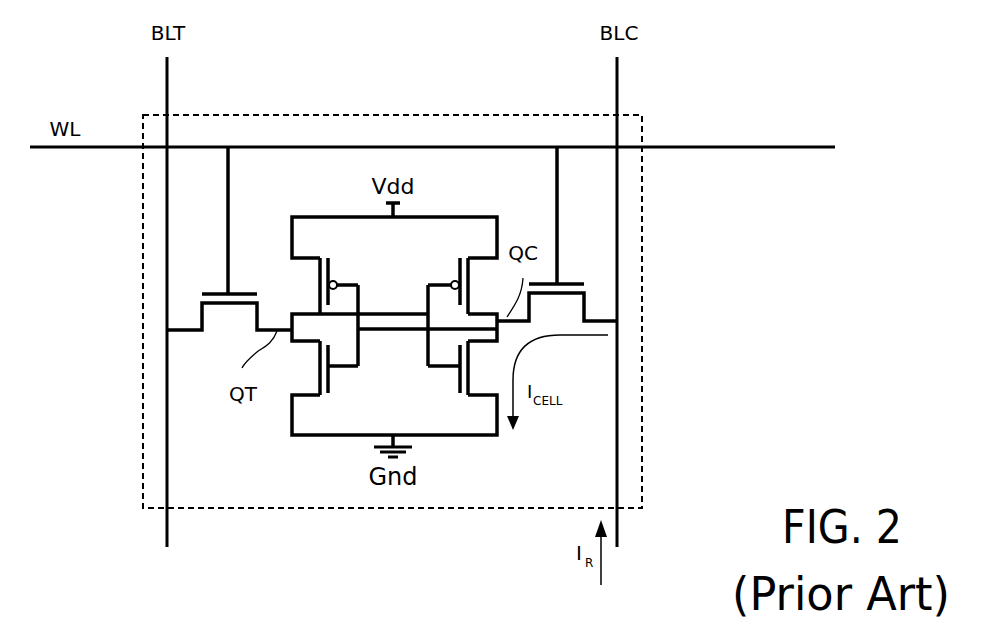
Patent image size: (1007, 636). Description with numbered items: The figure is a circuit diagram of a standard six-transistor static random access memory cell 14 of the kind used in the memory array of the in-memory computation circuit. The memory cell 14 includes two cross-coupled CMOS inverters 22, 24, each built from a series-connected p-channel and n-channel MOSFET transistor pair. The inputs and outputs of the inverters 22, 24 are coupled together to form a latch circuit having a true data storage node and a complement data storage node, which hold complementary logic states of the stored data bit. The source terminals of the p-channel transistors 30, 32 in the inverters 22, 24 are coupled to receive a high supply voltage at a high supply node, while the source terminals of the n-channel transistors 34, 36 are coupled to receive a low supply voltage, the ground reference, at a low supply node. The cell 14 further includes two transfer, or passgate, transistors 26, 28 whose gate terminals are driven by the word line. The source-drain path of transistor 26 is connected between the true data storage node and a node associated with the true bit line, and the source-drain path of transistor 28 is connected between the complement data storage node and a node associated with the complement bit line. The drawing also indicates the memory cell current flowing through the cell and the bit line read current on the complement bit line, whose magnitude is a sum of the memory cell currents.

The memory cell 14 is at (517, 110).
The CMOS inverter 22 is at (337, 235).
The CMOS inverter 24 is at (472, 235).
The transfer (passgate) transistor 26 is at (222, 307).
The transfer (passgate) transistor 28 is at (577, 277).
The p-channel transistor 30 is at (315, 277).
The p-channel transistor 32 is at (455, 270).
The n-channel transistor 34 is at (330, 387).
The n-channel transistor 36 is at (455, 388).